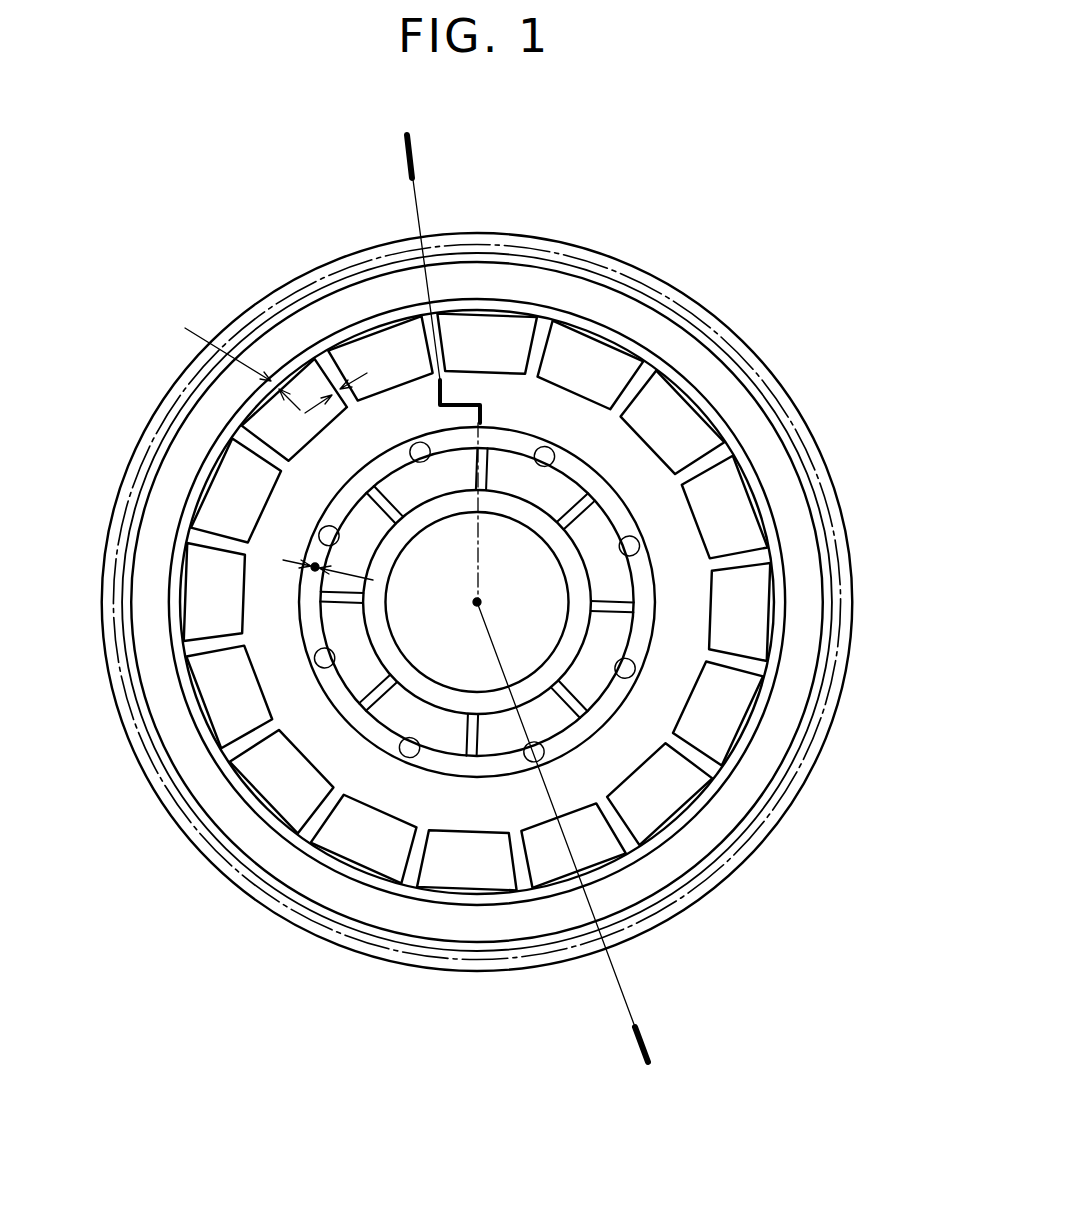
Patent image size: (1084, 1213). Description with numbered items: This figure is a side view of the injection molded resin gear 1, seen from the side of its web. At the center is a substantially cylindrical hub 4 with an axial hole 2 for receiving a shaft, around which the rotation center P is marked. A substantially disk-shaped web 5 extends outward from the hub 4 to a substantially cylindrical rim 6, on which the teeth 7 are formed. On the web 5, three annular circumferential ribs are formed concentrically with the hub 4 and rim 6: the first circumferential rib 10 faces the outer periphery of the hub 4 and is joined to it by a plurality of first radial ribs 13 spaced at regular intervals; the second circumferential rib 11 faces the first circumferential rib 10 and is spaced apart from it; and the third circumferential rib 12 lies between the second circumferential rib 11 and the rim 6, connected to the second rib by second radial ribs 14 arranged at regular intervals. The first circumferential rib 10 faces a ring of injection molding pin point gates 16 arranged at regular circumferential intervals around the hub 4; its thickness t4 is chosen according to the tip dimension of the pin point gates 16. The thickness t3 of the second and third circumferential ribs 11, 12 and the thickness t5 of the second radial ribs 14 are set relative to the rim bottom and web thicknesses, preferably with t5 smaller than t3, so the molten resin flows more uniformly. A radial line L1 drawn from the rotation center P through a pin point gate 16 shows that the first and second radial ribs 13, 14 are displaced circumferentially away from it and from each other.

The injection molded resin gear 1 is at (682, 272).
The axial hole 2 is at (553, 567).
The hub 4 is at (572, 662).
The web 5 is at (677, 610).
The rim 6 is at (818, 538).
The teeth 7 is at (830, 487).
The first circumferential rib 10 is at (580, 478).
The second circumferential rib 11 is at (655, 463).
The third circumferential rib 12 is at (760, 488).
The first radial ribs 13 is at (340, 600).
The second radial ribs 14 is at (412, 860).
The pin point gates 16 is at (528, 756).
The rotation center P is at (476, 603).
The radial line L1 is at (617, 977).
The thickness of the second and third circumferential ribs t3 is at (224, 354).
The thickness of the first circumferential rib t4 is at (315, 567).
The thickness of the second radial ribs t5 is at (344, 379).